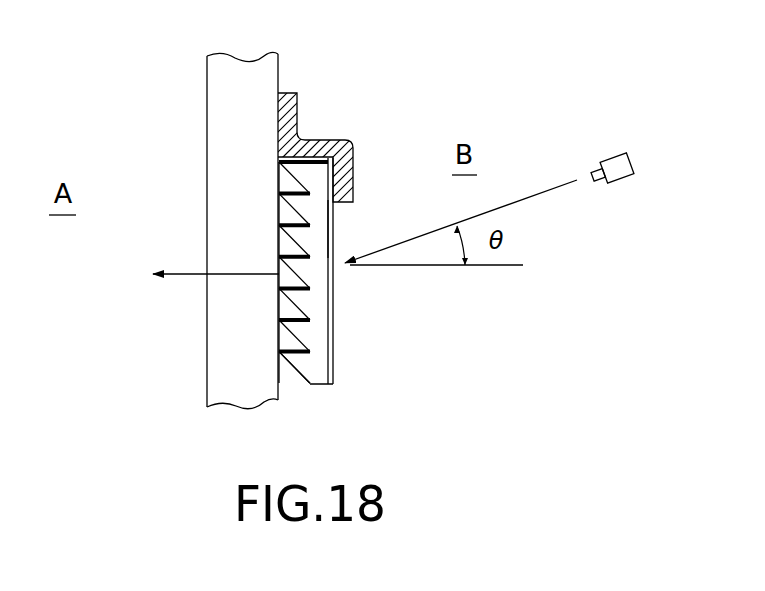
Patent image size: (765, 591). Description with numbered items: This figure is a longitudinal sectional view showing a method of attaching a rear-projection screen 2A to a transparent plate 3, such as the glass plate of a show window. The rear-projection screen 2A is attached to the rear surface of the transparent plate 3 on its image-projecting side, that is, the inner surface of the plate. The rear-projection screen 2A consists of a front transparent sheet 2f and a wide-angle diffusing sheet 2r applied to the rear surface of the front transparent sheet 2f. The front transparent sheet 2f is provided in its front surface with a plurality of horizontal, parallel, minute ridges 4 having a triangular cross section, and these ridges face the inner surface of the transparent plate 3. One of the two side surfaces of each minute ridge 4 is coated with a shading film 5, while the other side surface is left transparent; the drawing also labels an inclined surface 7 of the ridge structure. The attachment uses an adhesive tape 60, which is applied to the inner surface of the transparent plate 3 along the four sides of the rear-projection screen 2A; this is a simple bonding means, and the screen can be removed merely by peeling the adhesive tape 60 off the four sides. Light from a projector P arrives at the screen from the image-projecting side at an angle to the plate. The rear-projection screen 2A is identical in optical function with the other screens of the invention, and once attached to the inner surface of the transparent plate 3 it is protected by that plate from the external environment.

The transparent plate 3 is at (229, 66).
The adhesive tape 60 is at (331, 149).
The shading film 5 is at (281, 183).
The minute ridges 4 is at (300, 200).
The inclined face 7 is at (291, 238).
The wide-angle diffusing sheet 2r is at (331, 313).
The front transparent sheet 2f is at (318, 368).
The rear-projection screen 2A is at (329, 229).
The light source P is at (615, 173).